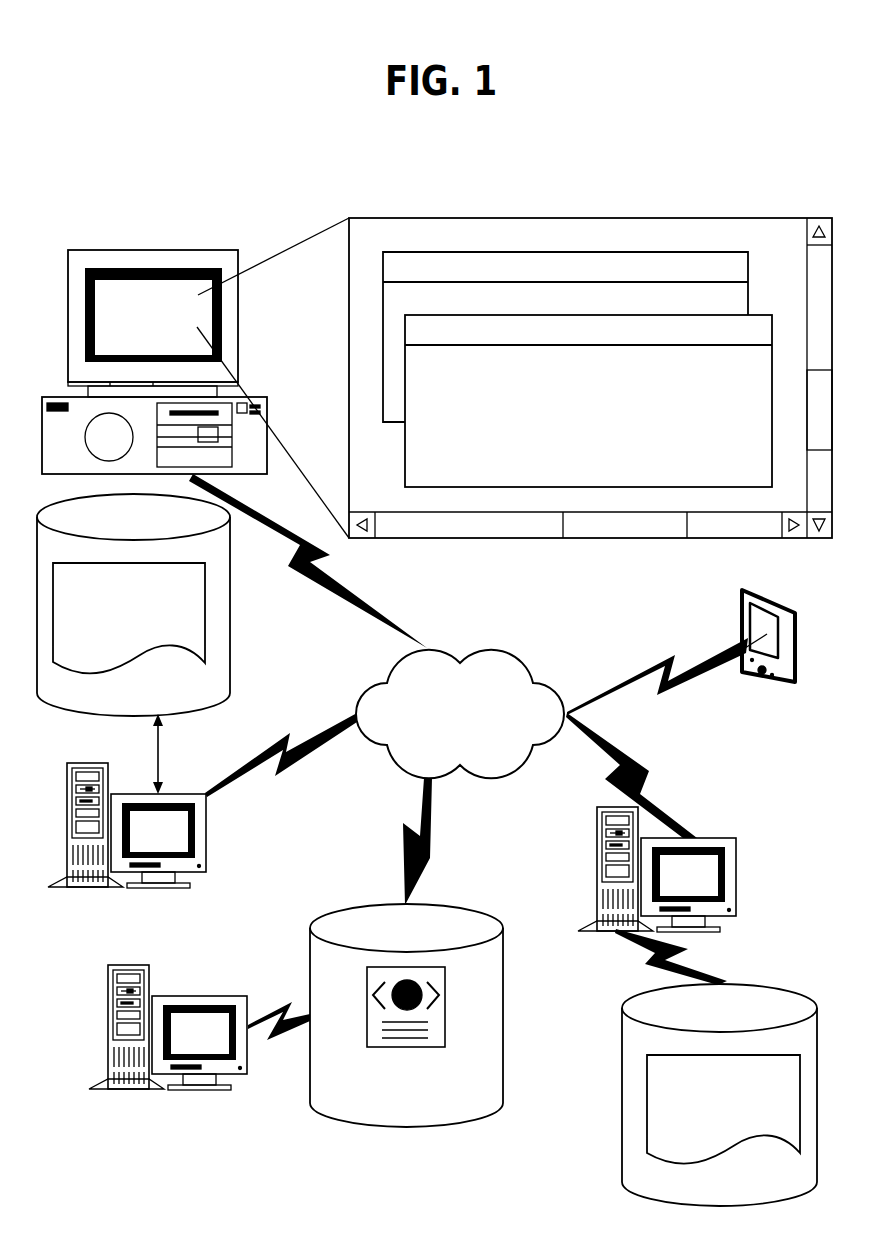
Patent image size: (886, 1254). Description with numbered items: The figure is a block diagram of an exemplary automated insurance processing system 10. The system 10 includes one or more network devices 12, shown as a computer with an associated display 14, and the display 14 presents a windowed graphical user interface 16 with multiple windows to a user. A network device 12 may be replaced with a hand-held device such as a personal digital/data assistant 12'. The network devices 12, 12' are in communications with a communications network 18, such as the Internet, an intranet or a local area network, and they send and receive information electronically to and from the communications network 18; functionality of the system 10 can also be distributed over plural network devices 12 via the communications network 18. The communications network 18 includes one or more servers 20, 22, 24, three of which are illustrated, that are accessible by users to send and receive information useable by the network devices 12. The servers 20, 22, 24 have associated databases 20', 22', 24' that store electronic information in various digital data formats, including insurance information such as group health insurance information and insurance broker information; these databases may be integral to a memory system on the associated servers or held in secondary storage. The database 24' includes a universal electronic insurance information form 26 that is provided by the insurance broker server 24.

The automated insurance processing system 10 is at (627, 156).
The network device 12 is at (195, 357).
The personal digital/data assistant (PDA) 12' is at (789, 640).
The display 14 is at (147, 295).
The windowed graphical user interface (GUI) 16 is at (598, 523).
The communications network 18 is at (492, 650).
The server 20 is at (152, 825).
The database 20' is at (162, 605).
The server 22 is at (678, 866).
The database 22' is at (688, 1095).
The insurance broker server 24 is at (174, 1024).
The database 24' is at (433, 1015).
The universal electronic insurance information form 26 is at (367, 1008).